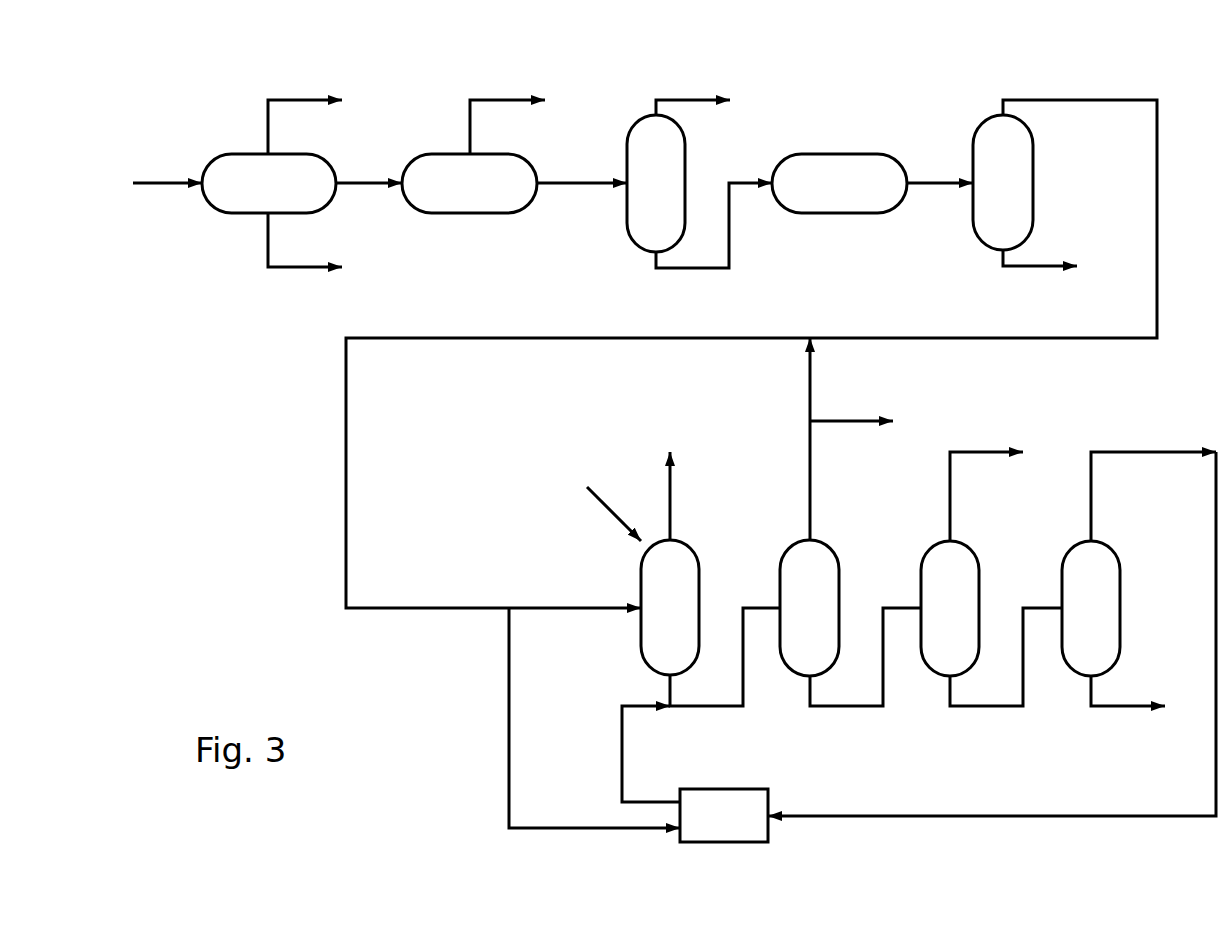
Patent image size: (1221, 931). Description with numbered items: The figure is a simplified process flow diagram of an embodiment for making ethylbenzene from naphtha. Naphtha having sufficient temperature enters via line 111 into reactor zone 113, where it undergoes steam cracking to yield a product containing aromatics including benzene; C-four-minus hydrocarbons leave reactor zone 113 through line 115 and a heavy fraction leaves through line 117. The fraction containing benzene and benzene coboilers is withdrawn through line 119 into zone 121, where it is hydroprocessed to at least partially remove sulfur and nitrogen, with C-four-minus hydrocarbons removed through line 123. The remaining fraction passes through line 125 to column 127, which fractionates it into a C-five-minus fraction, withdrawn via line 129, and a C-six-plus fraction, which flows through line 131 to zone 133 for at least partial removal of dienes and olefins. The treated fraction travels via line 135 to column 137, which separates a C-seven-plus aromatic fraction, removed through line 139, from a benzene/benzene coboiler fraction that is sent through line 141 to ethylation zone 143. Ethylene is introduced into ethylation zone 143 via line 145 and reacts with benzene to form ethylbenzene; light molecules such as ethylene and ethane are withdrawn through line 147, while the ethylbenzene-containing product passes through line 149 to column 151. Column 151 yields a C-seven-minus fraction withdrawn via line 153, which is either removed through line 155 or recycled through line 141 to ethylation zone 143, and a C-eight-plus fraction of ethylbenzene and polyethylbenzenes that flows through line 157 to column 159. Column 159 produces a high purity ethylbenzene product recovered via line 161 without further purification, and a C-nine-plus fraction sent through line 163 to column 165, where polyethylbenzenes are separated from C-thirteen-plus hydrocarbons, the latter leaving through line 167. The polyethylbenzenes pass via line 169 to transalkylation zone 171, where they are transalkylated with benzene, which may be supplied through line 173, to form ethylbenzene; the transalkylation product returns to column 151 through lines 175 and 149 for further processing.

The line 111 is at (146, 181).
The reactor zone 113 is at (305, 213).
The line 115 is at (296, 100).
The line 117 is at (300, 268).
The line 119 is at (377, 180).
The zone 121 is at (486, 213).
The line 123 is at (496, 100).
The line 125 is at (598, 180).
The column 127 is at (688, 160).
The line 129 is at (686, 100).
The line 131 is at (730, 245).
The zone 133 is at (836, 154).
The line 135 is at (943, 187).
The column 137 is at (1033, 160).
The line 139 is at (1030, 266).
The line 141 is at (1030, 100).
The ethylation zone 143 is at (686, 543).
The line 145 is at (610, 512).
The line 147 is at (673, 488).
The line 149 is at (705, 707).
The column 151 is at (828, 542).
The line 153 is at (812, 485).
The line 155 is at (840, 418).
The line 157 is at (845, 707).
The column 159 is at (966, 542).
The line 161 is at (982, 450).
The line 163 is at (985, 707).
The column 165 is at (1106, 542).
The line 167 is at (1113, 707).
The line 169 is at (1122, 450).
The transalkylation zone 171 is at (768, 794).
The line 173 is at (509, 710).
The line 175 is at (620, 748).